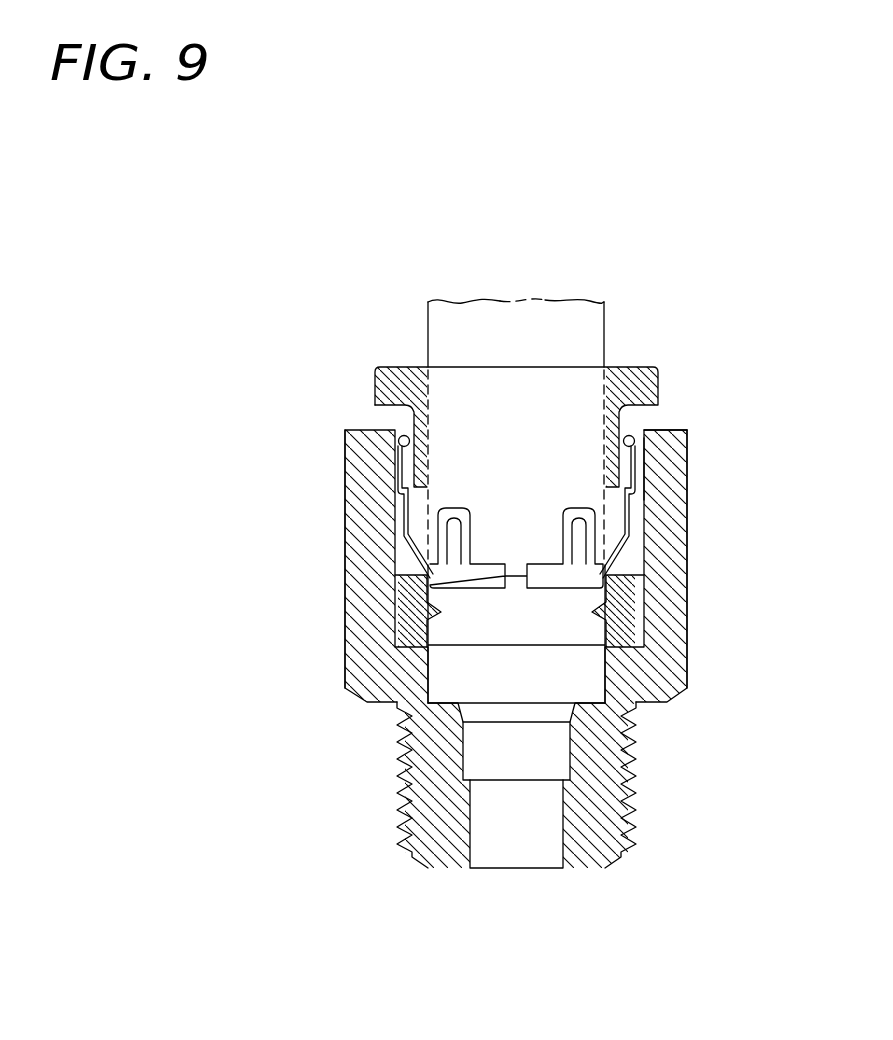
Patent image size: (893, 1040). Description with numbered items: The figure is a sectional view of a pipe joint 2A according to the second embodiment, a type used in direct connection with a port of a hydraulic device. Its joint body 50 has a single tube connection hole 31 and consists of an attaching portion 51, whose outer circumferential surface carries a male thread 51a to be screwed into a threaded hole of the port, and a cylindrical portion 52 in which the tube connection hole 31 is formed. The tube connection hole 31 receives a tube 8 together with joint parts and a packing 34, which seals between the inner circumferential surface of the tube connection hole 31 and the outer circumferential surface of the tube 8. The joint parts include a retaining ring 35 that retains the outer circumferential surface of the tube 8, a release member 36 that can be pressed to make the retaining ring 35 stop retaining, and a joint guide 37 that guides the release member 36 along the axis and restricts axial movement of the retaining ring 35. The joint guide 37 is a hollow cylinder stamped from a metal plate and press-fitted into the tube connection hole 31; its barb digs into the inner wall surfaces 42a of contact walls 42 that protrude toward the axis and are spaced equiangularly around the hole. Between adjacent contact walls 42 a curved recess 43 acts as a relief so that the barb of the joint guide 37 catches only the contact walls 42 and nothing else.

The pipe joint 2A is at (680, 336).
The tube 8 is at (535, 322).
The tube connection hole 31 is at (552, 660).
The packing 34 is at (418, 597).
The retaining ring 35 is at (615, 550).
The release member 36 is at (395, 363).
The joint guide 37 is at (647, 470).
The contact walls 42 is at (439, 507).
The inner wall surfaces 42a is at (398, 452).
The recess 43 is at (643, 447).
The joint body 50 is at (514, 635).
The attaching portion 51 is at (518, 785).
The male thread 51a is at (630, 794).
The cylindrical portion 52 is at (370, 553).